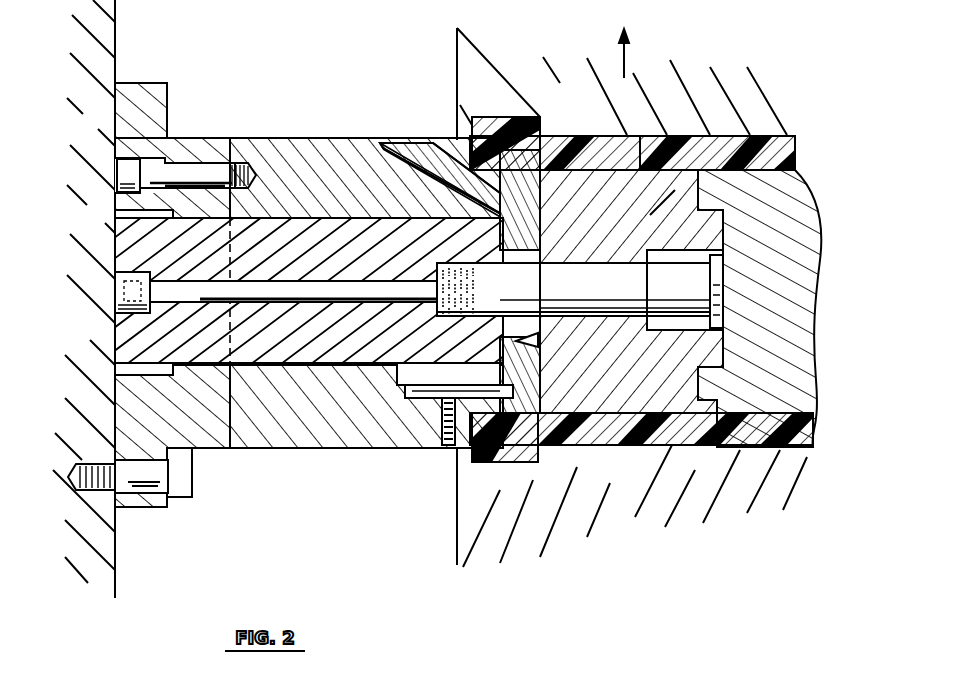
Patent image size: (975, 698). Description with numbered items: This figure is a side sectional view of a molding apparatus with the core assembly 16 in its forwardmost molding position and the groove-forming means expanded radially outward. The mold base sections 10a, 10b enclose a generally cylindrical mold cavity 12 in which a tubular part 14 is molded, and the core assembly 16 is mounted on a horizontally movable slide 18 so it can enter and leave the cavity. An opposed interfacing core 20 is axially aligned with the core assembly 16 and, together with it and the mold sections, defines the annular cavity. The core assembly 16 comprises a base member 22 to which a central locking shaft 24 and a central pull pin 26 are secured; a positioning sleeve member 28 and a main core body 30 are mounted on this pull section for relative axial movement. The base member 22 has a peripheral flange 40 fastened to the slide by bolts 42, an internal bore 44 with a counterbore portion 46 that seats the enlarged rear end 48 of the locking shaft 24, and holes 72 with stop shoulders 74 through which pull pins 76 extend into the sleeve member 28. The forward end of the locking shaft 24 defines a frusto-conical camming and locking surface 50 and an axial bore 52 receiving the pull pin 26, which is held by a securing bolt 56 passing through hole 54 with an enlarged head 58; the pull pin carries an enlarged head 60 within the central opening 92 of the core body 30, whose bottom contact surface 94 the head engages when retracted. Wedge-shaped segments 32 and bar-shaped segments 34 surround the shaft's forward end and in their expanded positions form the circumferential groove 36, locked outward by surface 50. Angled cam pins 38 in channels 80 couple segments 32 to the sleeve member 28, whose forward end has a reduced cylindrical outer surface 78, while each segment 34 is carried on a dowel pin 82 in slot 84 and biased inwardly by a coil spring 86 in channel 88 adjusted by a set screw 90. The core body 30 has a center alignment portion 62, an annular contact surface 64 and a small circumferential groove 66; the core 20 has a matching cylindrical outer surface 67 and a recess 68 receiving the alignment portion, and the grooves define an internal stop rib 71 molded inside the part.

The mold base section 10a is at (477, 65).
The mold base section 10b is at (473, 523).
The mold cavity 12 is at (631, 291).
The tubular part 14 is at (686, 130).
The core assembly 16 is at (240, 118).
The slide 18 is at (115, 565).
The interfacing core 20 is at (795, 218).
The base member 22 is at (138, 78).
The central locking shaft 24 is at (312, 216).
The central pull pin 26 is at (565, 280).
The positioning sleeve member 28 is at (258, 135).
The main core body 30 is at (620, 447).
The wedge-shaped segments 32 is at (550, 135).
The bar-shaped segments 34 is at (520, 460).
The circumferential groove 36 is at (541, 187).
The angled cam pins 38 is at (432, 152).
The peripheral flange 40 is at (168, 103).
The bolts 42 is at (173, 493).
The internal bore 44 is at (320, 353).
The counterbore portion 46 is at (140, 215).
The enlarged rear end 48 is at (150, 378).
The camming and locking surface 50 is at (534, 341).
The axial bore 52 is at (493, 310).
The axially extending hole 54 is at (333, 300).
The securing bolt 56 is at (176, 291).
The enlarged head 58 is at (130, 298).
The enlarged head 60 is at (725, 290).
The center alignment portion 62 is at (715, 210).
The annular contact surface 64 is at (705, 395).
The circumferential groove 66 is at (705, 445).
The cylindrical outer surface 67 is at (750, 134).
The recess 68 is at (717, 343).
The internal stop rib 71 is at (665, 200).
The holes 72 is at (190, 185).
The stop shoulder 74 is at (118, 196).
The pull pin 76 is at (123, 172).
The cylindrical outer surface 78 is at (487, 135).
The angled channel 80 is at (412, 155).
The dowel pin 82 is at (427, 385).
The axially extending slot 84 is at (402, 388).
The coil spring 86 is at (440, 436).
The channel 88 is at (452, 447).
The set screw 90 is at (441, 440).
The central opening 92 is at (655, 319).
The bottom contact surface 94 is at (657, 253).